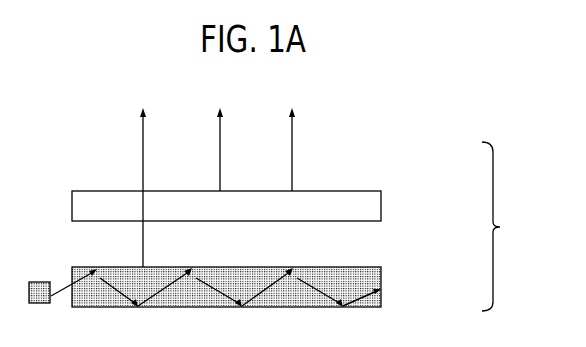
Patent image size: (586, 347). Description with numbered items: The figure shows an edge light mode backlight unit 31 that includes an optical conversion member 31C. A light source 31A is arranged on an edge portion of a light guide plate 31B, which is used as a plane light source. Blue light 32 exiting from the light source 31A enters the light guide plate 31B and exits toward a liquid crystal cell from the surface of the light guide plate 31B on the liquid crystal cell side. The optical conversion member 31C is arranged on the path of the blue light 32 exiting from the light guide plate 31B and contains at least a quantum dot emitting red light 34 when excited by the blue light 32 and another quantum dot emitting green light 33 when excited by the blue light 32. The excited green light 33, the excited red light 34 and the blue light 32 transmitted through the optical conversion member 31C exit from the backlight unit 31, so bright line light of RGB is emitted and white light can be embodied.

The backlight unit 31 is at (502, 226).
The light source 31A is at (38, 282).
The light guide plate 31B is at (381, 287).
The optical conversion member 31C is at (381, 206).
The blue light 32 is at (143, 122).
The green light 33 is at (220, 118).
The red light 34 is at (292, 132).